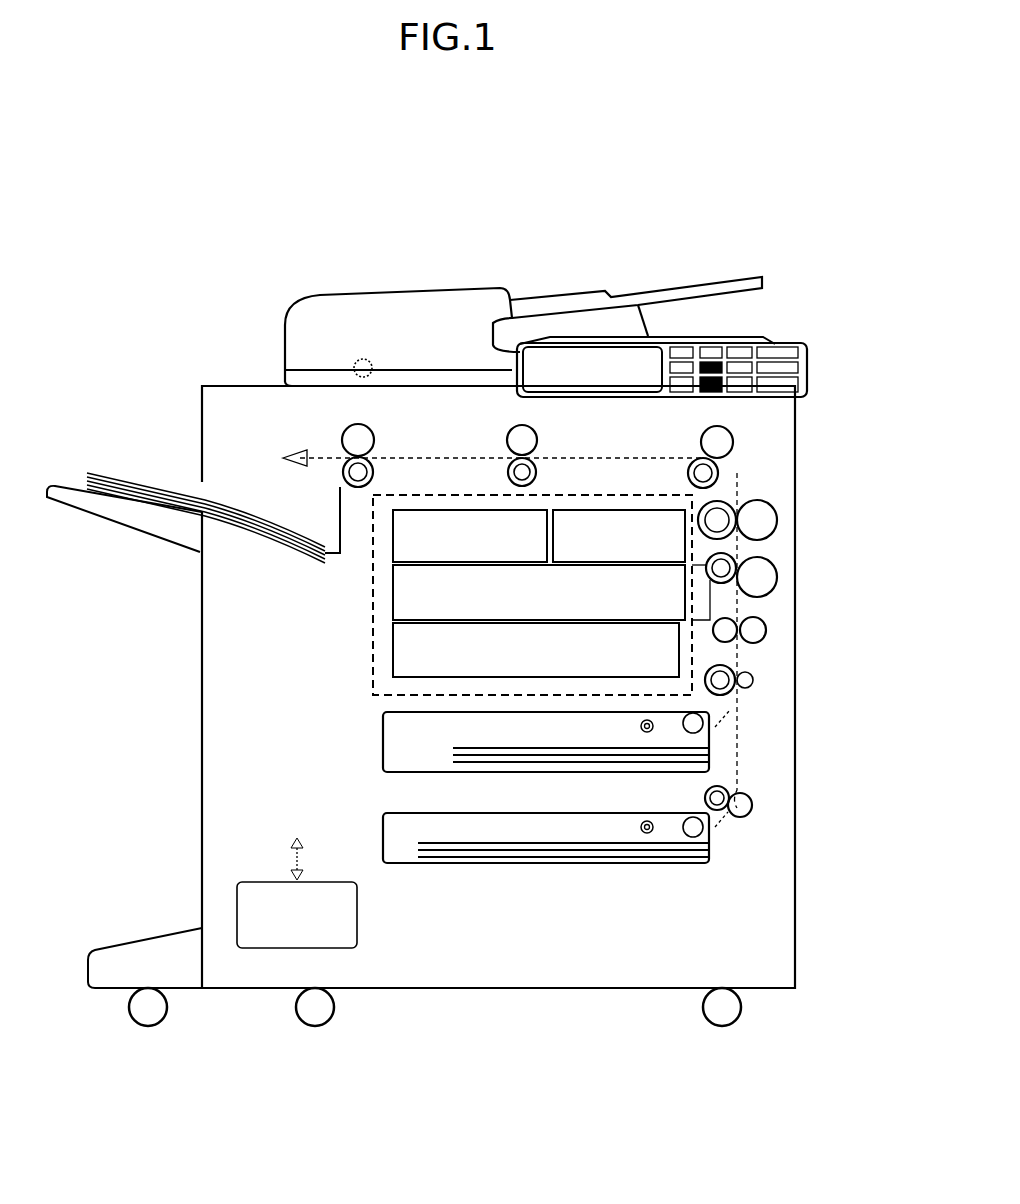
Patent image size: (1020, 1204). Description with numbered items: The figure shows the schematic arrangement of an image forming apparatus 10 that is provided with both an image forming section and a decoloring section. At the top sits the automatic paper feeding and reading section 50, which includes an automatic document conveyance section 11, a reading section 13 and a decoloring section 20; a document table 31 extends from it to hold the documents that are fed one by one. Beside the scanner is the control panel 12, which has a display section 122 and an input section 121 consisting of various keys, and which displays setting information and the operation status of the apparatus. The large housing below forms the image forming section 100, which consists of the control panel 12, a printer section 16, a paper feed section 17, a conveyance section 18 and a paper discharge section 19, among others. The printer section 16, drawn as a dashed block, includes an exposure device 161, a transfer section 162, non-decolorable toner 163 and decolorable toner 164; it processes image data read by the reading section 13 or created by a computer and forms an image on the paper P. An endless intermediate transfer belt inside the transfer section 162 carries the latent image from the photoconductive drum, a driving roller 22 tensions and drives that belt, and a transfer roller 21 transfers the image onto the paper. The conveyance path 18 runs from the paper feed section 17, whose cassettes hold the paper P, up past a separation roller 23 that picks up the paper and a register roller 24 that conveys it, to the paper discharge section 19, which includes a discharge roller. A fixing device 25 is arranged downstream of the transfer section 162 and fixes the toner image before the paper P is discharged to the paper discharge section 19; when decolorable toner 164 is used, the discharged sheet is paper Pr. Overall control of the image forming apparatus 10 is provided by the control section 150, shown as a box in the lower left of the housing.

The image forming apparatus 10 is at (168, 733).
The automatic document conveyance section 11 is at (325, 320).
The decoloring section 20 is at (307, 239).
The automatic paper feeding and reading section 50 is at (448, 336).
The reading section 13 is at (366, 350).
The document table 31 is at (658, 292).
The control panel 12 is at (712, 336).
The display section 122 is at (582, 355).
The input section 121 is at (790, 345).
The paper discharge section 19 is at (75, 487).
The image forming section 100 is at (306, 591).
The conveyance section 18 is at (735, 477).
The printer section 16 is at (372, 690).
The non-decolorable toner 163 is at (456, 508).
The decolorable toner 164 is at (626, 506).
The transfer section 162 is at (392, 610).
The exposure device 161 is at (392, 656).
The fixing device 25 is at (787, 515).
The driving roller 22 is at (738, 562).
The transfer roller 21 is at (780, 578).
The register roller 24 is at (768, 628).
The separation roller 23 is at (755, 680).
The paper feed section 17 is at (709, 745).
The paper P is at (535, 765).
The control section 150 is at (412, 939).